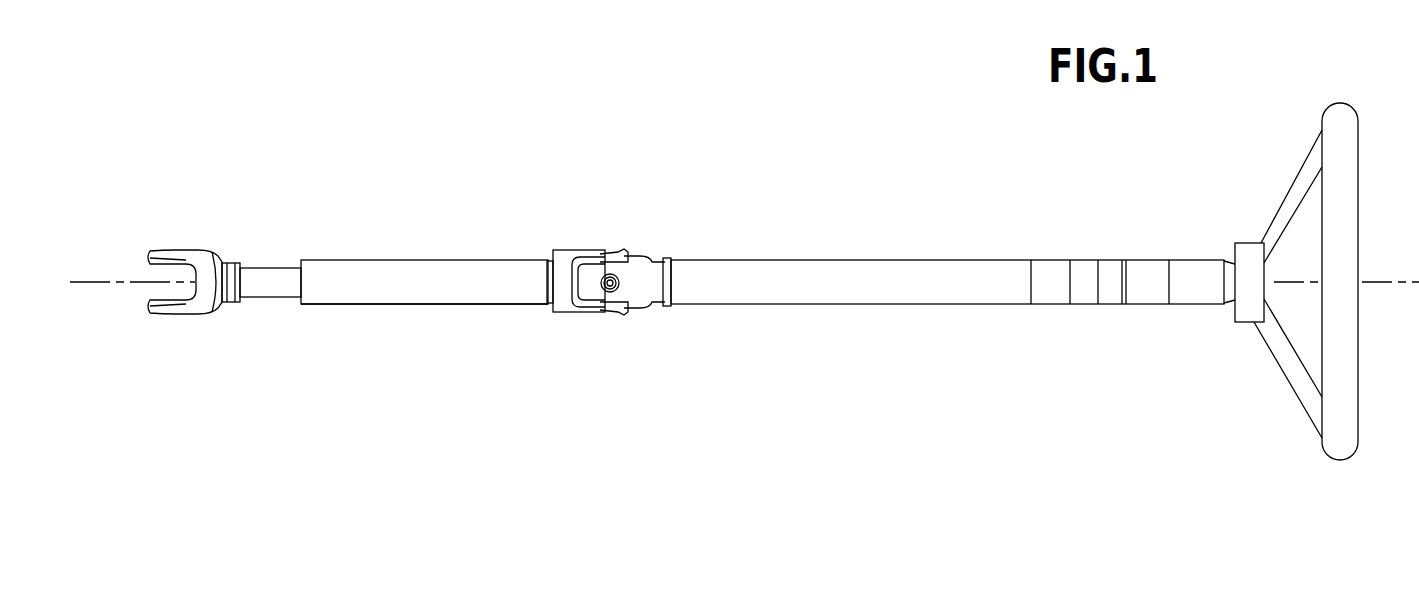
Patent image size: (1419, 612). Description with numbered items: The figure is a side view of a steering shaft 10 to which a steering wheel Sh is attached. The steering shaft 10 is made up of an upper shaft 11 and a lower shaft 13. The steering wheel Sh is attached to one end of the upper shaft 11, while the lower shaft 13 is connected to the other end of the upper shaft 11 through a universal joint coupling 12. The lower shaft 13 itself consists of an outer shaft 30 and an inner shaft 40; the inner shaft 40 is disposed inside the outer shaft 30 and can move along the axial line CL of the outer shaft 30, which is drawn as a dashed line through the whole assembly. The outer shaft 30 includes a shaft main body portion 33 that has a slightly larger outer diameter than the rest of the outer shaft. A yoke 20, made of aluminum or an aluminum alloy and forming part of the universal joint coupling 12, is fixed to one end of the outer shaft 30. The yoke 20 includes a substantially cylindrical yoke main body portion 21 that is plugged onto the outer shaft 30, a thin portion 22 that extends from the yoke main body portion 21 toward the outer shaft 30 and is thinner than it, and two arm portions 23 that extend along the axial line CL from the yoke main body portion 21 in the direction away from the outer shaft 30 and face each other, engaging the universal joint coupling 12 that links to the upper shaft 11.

The steering shaft 10 is at (930, 101).
The upper shaft 11 is at (868, 280).
The universal joint coupling 12 is at (581, 254).
The lower shaft 13 is at (450, 160).
The yoke 20 is at (585, 248).
The yoke main body portion 21 is at (572, 300).
The thin portion 22 is at (550, 282).
The arm portion 23 is at (606, 252).
The outer shaft 30 is at (418, 259).
The shaft main body portion 33 is at (345, 305).
The inner shaft 40 is at (262, 264).
The axial line CL is at (108, 282).
The steering wheel Sh is at (1346, 118).